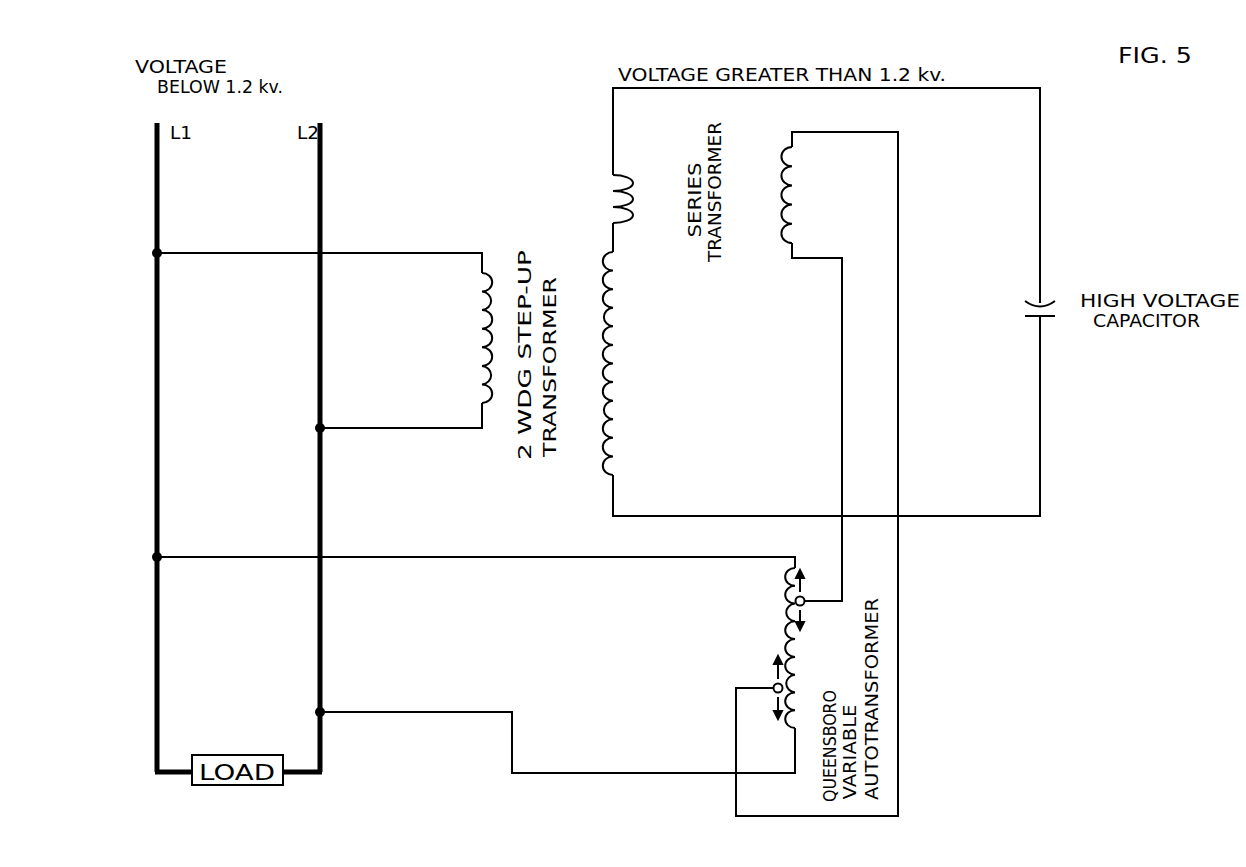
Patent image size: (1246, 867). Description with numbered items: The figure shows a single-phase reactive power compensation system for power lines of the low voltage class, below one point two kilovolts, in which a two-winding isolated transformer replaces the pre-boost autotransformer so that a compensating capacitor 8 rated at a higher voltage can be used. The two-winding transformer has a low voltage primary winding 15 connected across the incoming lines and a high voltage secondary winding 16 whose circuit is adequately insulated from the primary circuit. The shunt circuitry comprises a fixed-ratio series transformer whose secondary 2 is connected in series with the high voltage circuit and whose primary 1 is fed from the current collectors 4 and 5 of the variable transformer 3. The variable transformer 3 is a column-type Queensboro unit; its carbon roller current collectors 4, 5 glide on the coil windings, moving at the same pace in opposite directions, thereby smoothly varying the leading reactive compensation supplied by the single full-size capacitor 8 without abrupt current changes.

The primary 1 is at (777, 195).
The secondary 2 is at (634, 199).
The variable transformer 3 is at (778, 648).
The current collector 4 is at (810, 600).
The current collector 5 is at (768, 687).
The capacitor 8 is at (1045, 327).
The low voltage winding 15 is at (472, 338).
The high voltage winding 16 is at (622, 363).